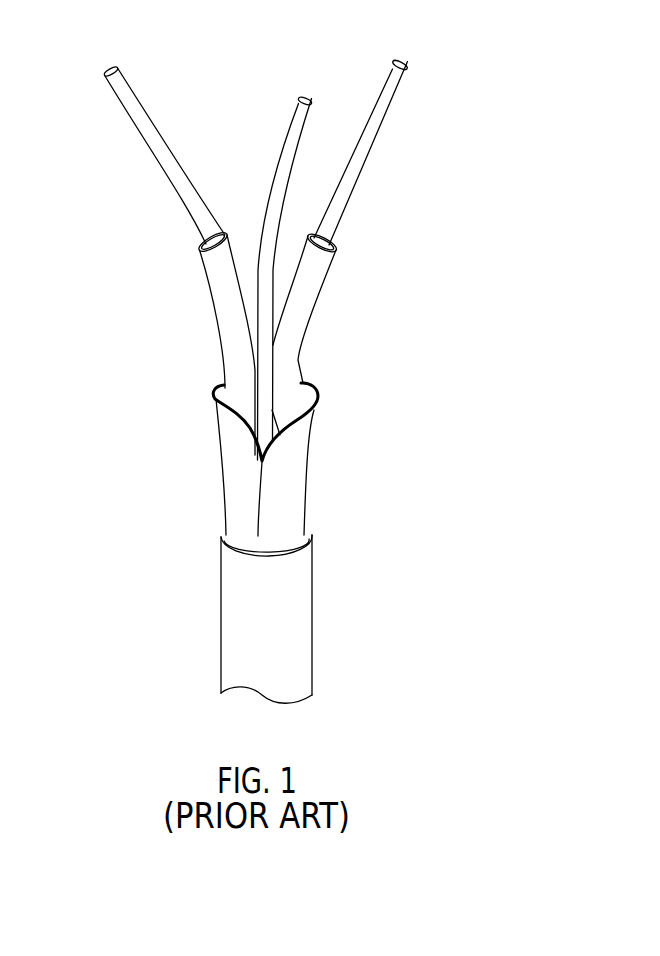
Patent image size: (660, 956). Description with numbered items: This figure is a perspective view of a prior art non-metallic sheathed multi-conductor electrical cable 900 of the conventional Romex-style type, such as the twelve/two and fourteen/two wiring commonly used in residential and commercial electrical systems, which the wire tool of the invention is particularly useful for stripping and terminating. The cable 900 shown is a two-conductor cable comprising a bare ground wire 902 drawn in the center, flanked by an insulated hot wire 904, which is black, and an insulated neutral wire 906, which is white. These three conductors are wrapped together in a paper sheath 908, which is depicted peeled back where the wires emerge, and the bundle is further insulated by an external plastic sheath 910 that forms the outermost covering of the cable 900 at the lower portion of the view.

The non-metallic sheathed multi-conductor electrical cable 900 is at (321, 588).
The bare ground wire 902 is at (290, 133).
The insulated hot wire 904 is at (212, 268).
The insulated neutral wire 906 is at (305, 292).
The paper sheath 908 is at (231, 455).
The external plastic sheath 910 is at (228, 598).